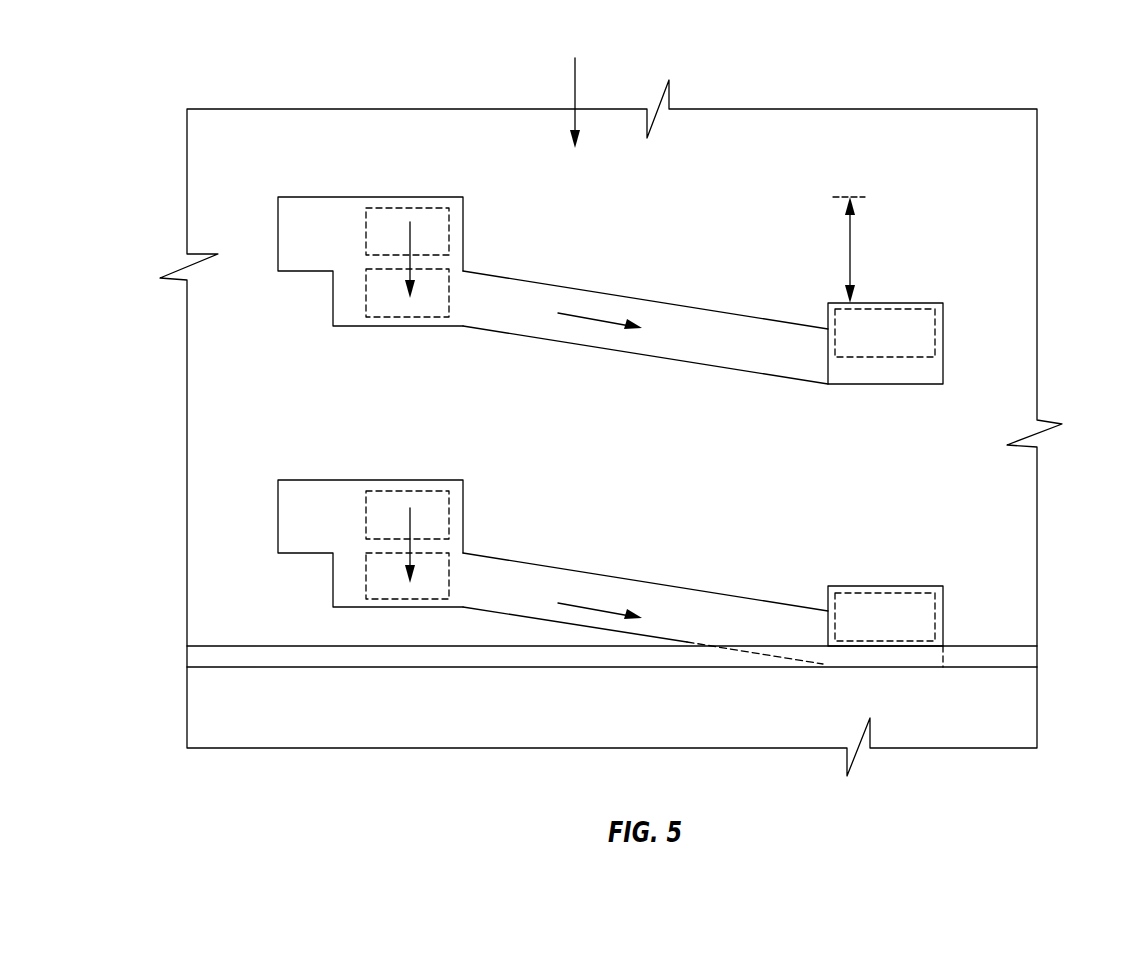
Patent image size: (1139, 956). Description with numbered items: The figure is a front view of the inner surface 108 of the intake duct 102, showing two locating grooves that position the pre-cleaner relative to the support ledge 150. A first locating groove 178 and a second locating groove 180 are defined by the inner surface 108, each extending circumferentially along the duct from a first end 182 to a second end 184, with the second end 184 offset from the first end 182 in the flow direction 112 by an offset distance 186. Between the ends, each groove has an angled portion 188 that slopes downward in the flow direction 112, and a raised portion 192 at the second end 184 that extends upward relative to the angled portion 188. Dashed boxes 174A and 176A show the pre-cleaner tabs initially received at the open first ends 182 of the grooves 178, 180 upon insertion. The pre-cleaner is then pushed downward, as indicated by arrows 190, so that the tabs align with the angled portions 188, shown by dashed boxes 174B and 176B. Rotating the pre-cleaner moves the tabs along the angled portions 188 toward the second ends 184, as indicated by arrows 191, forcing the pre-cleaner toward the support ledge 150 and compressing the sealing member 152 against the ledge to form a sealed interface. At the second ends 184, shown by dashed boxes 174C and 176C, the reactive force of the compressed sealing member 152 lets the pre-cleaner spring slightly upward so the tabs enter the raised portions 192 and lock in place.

The intake duct 102 is at (642, 404).
The inner surface 108 is at (1016, 181).
The flow direction 112 is at (575, 88).
The support ledge 150 is at (523, 670).
The sealing member 152 is at (430, 656).
The dashed box 174A is at (433, 208).
The dashed box 174B is at (413, 322).
The dashed box 174C is at (903, 358).
The dashed box 176A is at (433, 491).
The dashed box 176B is at (366, 580).
The dashed box 176C is at (905, 592).
The first locating groove 178 is at (556, 280).
The second locating groove 180 is at (558, 562).
The first end 182 is at (312, 197).
The second end 184 is at (943, 355).
The offset distance 186 is at (850, 275).
The angled portion 188 is at (737, 340).
The arrows 190 is at (410, 262).
The arrows 191 is at (590, 320).
The raised portion 192 is at (925, 303).